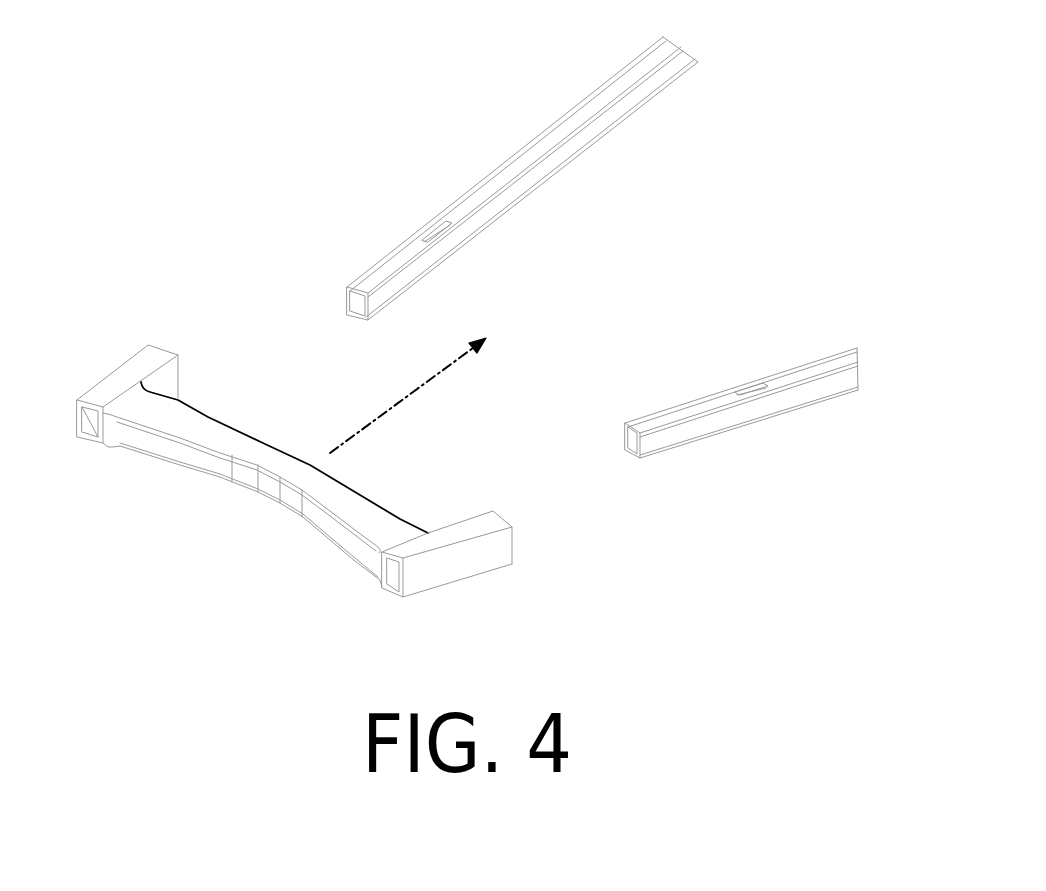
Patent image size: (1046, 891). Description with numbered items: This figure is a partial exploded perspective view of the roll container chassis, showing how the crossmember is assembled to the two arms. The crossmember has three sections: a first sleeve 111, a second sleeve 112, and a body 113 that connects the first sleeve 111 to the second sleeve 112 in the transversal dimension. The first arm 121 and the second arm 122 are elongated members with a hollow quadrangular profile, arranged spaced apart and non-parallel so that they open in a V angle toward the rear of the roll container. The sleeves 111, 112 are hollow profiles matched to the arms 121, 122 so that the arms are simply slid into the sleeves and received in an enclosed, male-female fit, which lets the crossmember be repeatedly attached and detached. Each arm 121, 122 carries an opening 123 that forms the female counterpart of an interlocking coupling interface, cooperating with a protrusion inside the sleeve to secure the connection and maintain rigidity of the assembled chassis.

The first sleeve 111 is at (137, 368).
The second sleeve 112 is at (473, 555).
The body 113 is at (270, 487).
The first arm 121 is at (535, 152).
The second arm 122 is at (813, 367).
The opening 123 is at (432, 232).